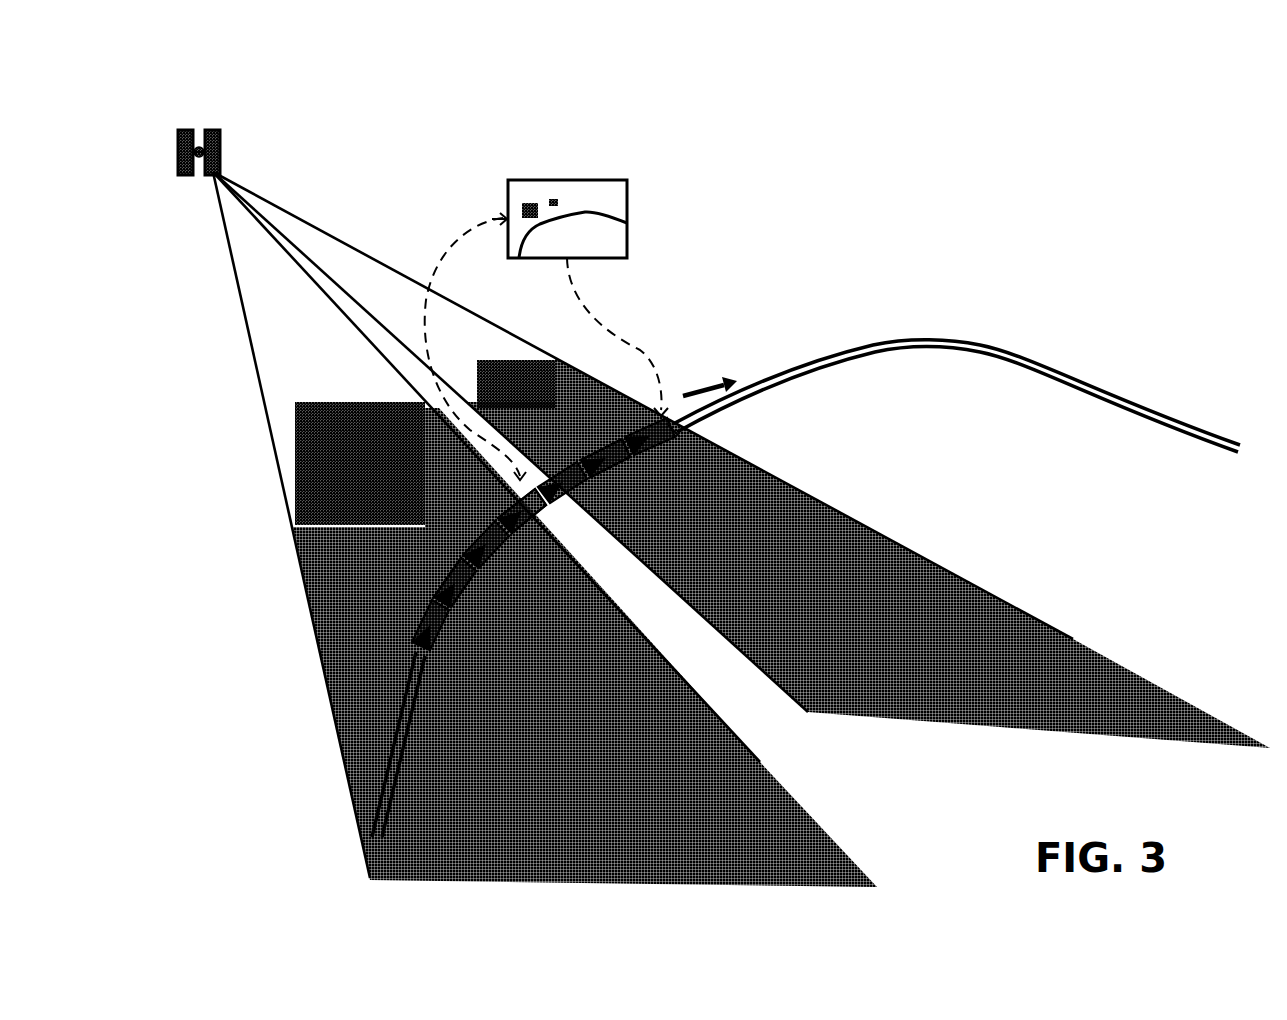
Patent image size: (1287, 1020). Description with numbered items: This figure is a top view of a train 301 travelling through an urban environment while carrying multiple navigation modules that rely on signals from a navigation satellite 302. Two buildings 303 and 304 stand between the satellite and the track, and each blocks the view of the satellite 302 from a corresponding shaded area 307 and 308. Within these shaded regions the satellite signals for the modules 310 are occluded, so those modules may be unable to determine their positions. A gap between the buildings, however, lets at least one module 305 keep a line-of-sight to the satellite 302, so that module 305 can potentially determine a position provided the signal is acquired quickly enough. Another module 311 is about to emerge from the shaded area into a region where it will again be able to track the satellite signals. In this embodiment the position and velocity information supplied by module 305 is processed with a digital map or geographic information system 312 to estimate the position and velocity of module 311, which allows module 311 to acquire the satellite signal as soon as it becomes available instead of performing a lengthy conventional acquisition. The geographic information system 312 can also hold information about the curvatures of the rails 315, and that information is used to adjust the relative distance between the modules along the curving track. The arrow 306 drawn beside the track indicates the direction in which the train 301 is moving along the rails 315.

The train 301 is at (430, 622).
The navigation satellite 302 is at (214, 130).
The building 303 is at (360, 463).
The building 304 is at (516, 384).
The module 305 is at (537, 507).
The direction of travel 306 is at (719, 368).
The shaded area 307 is at (585, 647).
The shaded area 308 is at (868, 553).
The modules 310 is at (592, 455).
The module 311 is at (680, 433).
The geographic information system 312 is at (627, 180).
The rails 315 is at (953, 342).